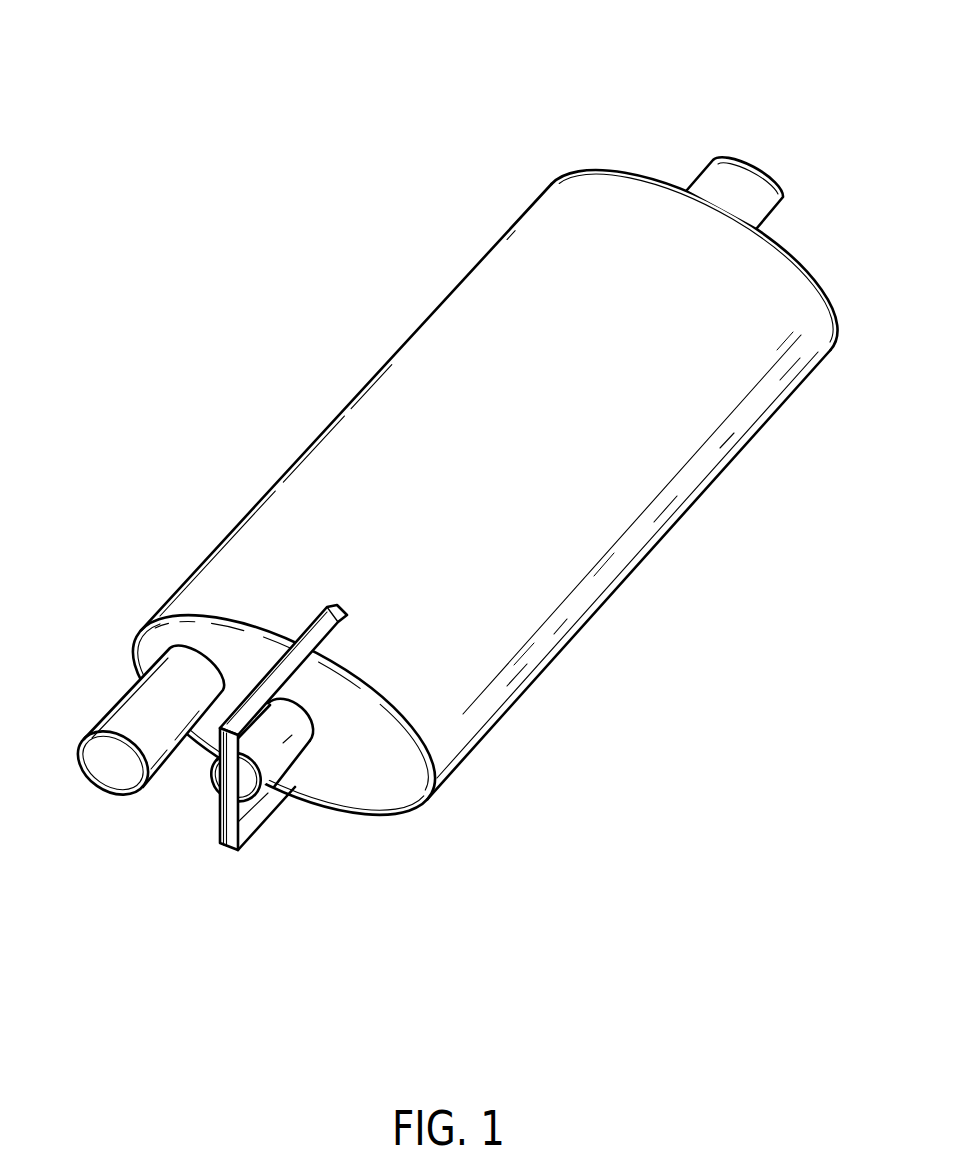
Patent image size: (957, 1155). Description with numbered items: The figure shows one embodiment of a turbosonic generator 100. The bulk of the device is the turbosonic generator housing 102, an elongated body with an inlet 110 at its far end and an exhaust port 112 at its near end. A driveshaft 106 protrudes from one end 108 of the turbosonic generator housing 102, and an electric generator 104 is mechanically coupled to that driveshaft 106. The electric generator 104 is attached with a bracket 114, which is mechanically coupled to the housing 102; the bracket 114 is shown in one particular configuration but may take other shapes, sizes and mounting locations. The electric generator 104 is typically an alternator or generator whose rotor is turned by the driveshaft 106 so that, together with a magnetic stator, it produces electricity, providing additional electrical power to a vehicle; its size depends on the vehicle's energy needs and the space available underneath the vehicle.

The turbosonic generator 100 is at (800, 45).
The turbosonic generator housing 102 is at (382, 420).
The electric generator 104 is at (270, 748).
The driveshaft 106 is at (301, 714).
The one end 108 is at (183, 627).
The inlet 110 is at (713, 177).
The exhaust port 112 is at (150, 723).
The bracket 114 is at (257, 820).